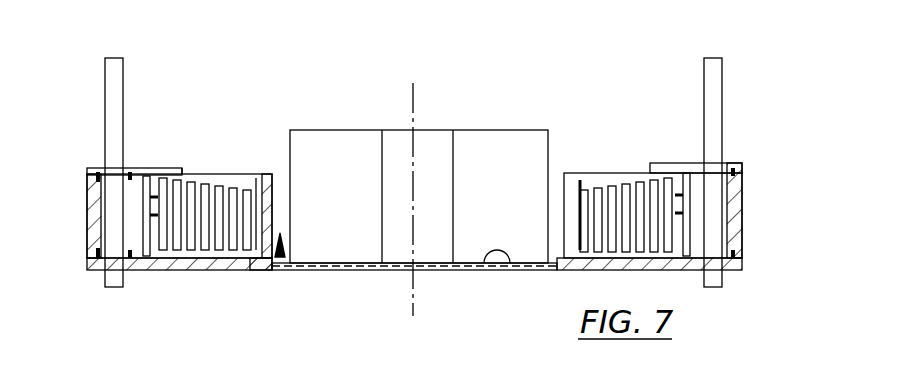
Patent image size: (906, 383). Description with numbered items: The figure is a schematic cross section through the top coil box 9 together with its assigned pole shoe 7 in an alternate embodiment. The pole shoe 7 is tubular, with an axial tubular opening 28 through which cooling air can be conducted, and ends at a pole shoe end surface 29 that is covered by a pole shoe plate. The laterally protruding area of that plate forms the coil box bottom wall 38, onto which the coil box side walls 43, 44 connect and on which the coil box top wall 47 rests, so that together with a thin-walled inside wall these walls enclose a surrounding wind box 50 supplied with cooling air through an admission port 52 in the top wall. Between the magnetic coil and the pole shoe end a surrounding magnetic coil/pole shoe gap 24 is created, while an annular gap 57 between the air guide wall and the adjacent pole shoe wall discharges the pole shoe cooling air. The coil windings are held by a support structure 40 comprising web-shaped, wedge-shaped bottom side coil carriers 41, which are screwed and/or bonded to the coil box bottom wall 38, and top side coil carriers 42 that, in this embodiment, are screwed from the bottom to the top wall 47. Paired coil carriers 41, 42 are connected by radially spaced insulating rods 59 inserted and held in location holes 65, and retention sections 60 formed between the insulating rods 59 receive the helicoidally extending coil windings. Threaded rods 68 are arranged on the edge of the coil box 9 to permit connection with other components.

The pole shoe 7 is at (522, 168).
The top coil box 9 is at (658, 125).
The magnetic coil/pole shoe gap 24 is at (281, 258).
The axial tubular opening 28 is at (437, 172).
The pole shoe end surface 29 is at (506, 268).
The coil box bottom wall 38 is at (250, 272).
The support structure 40 is at (229, 128).
The bottom side coil carriers 41 is at (171, 258).
The top side coil carriers 42 is at (415, 197).
The coil box side wall 43 is at (100, 200).
The coil box side wall 44 is at (439, 233).
The coil box top wall 47 is at (130, 172).
The wind box 50 is at (121, 250).
The admission port 52 is at (689, 278).
The annular gap 57 is at (325, 307).
The insulating rods 59 is at (265, 215).
The retention sections 60 is at (243, 222).
The location holes 65 is at (222, 215).
The threaded rods 68 is at (110, 97).